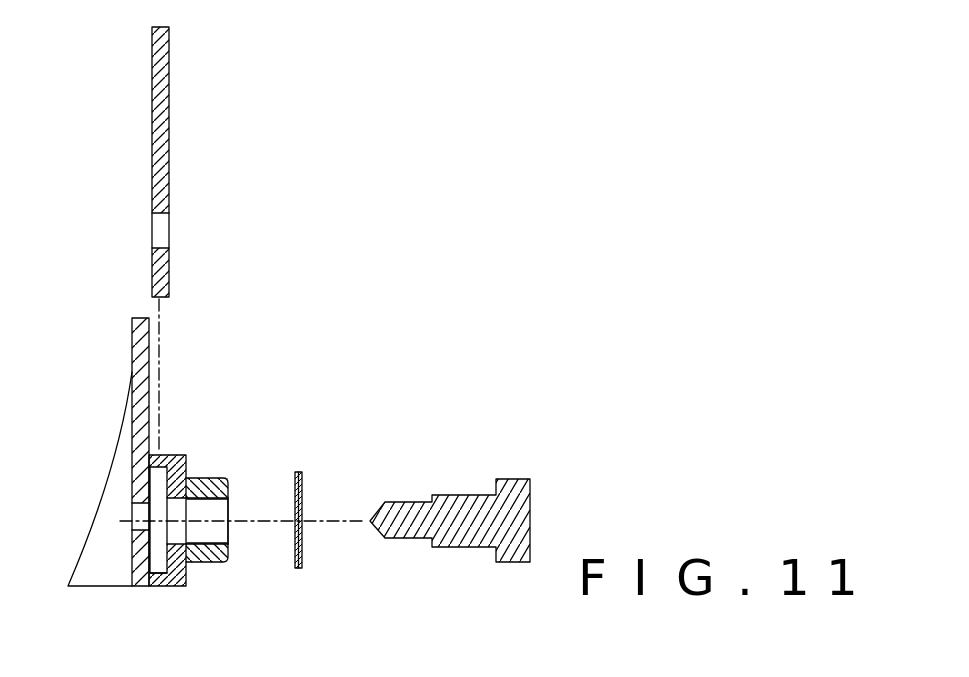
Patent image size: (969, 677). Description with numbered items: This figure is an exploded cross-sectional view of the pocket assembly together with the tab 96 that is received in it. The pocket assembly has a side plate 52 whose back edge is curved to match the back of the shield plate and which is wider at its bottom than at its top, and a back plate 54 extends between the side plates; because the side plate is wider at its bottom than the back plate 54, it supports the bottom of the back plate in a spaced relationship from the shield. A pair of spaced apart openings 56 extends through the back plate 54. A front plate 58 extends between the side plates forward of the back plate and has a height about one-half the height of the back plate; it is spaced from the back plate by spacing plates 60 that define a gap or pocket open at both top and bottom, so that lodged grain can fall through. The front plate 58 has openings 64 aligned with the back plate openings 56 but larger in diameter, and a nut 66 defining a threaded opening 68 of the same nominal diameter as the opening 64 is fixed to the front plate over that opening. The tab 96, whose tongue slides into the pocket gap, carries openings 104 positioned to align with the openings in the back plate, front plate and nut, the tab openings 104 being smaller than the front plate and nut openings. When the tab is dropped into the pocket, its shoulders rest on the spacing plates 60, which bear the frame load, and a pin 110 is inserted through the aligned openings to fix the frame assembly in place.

The side plate 52 is at (116, 501).
The back plate 54 is at (149, 364).
The opening 56 is at (132, 528).
The front plate 58 is at (186, 455).
The spacing plate 60 is at (158, 565).
The opening 64 is at (187, 520).
The nut 66 is at (210, 478).
The threaded opening 68 is at (228, 538).
The tab 96 is at (176, 95).
The opening 104 is at (167, 247).
The pin 110 is at (467, 462).